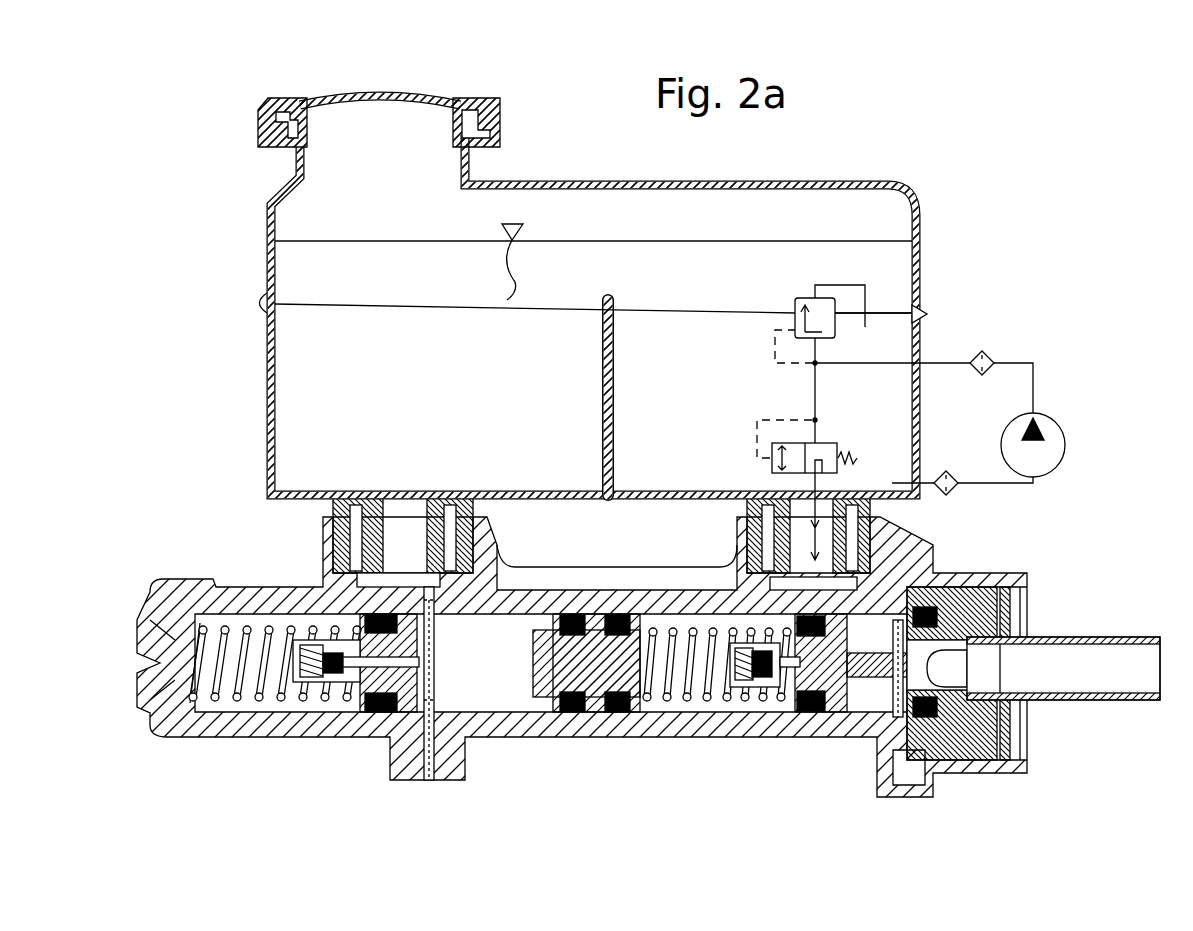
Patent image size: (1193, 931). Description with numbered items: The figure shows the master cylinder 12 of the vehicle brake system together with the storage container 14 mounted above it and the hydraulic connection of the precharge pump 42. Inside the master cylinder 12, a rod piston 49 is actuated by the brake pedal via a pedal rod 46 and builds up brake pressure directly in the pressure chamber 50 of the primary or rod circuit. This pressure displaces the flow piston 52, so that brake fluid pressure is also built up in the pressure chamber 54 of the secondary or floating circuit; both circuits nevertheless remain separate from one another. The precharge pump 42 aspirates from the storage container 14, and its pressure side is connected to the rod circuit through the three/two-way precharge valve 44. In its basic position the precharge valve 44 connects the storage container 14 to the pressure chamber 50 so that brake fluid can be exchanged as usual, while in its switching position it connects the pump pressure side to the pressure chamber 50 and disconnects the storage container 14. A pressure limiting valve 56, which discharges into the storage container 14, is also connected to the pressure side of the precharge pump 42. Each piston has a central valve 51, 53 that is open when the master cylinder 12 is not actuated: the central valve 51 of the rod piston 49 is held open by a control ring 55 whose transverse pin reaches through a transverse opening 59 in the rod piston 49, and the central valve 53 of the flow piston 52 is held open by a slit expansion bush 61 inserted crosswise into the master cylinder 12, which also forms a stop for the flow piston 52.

The master cylinder 12 is at (248, 585).
The storage container 14 is at (267, 250).
The precharge pump 42 is at (1065, 432).
The precharge valve 44 is at (828, 440).
The pedal rod 46 is at (1115, 650).
The rod piston 49 is at (862, 702).
The pressure chamber of the rod circuit 50 is at (732, 710).
The central valve 51 is at (785, 690).
The flow piston 52 is at (603, 680).
The central valve 53 is at (343, 690).
The pressure chamber of the floating circuit 54 is at (285, 705).
The control ring 55 is at (867, 702).
The pressure limiting valve 56 is at (813, 306).
The transverse opening 59 is at (935, 745).
The slit expansion bush 61 is at (450, 713).